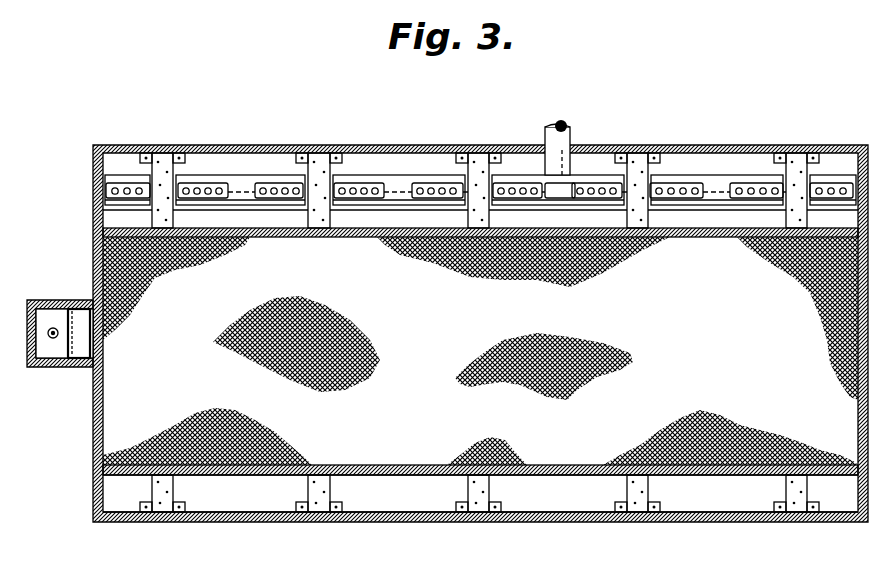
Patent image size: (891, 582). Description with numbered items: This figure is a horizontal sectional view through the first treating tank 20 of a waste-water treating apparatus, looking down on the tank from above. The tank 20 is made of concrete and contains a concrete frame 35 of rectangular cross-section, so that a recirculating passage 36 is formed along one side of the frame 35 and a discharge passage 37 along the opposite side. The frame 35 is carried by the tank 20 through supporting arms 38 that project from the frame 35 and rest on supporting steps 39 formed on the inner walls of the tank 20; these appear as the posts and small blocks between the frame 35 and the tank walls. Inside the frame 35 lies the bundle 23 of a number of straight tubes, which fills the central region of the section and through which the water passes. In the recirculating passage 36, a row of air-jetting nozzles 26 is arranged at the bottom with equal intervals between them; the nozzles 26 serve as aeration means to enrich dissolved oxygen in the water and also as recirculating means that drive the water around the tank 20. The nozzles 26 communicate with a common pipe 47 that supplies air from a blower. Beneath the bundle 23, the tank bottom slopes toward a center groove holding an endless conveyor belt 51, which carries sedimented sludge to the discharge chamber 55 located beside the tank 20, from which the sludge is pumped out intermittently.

The first treating tank 20 is at (592, 155).
The bundle of straight tubes 23 is at (208, 440).
The air-jetting nozzles 26 is at (265, 184).
The frame 35 is at (400, 476).
The recirculating passage 36 is at (400, 168).
The discharge passage 37 is at (578, 490).
The supporting arms 38 is at (318, 165).
The supporting steps 39 is at (183, 158).
The common pipe 47 is at (548, 186).
The endless conveyor belt 51 is at (80, 318).
The discharge chamber 55 is at (52, 352).